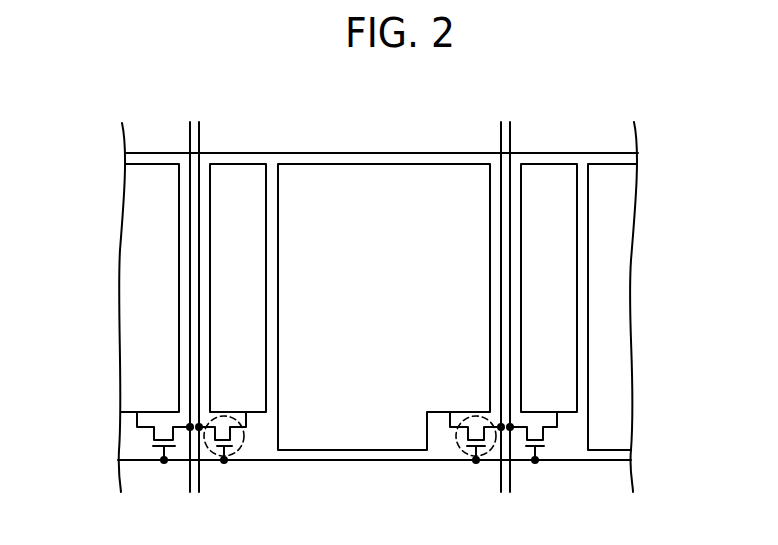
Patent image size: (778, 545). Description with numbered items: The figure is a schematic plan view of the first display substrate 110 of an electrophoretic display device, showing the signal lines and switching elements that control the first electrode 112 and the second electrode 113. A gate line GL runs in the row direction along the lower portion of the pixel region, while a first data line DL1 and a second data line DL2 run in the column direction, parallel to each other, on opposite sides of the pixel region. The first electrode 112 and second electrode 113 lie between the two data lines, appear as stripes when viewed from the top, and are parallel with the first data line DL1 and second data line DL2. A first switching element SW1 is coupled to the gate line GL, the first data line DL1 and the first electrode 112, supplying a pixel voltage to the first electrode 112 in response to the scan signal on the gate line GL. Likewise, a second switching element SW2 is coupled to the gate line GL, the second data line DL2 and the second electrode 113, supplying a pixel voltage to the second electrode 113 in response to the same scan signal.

The first display substrate 110 is at (97, 289).
The first electrode 112 is at (245, 185).
The second electrode 113 is at (378, 185).
The first data line DL1 is at (200, 133).
The second data line DL2 is at (500, 133).
The gate line GL is at (328, 462).
The first switching element SW1 is at (242, 442).
The second switching element SW2 is at (456, 444).